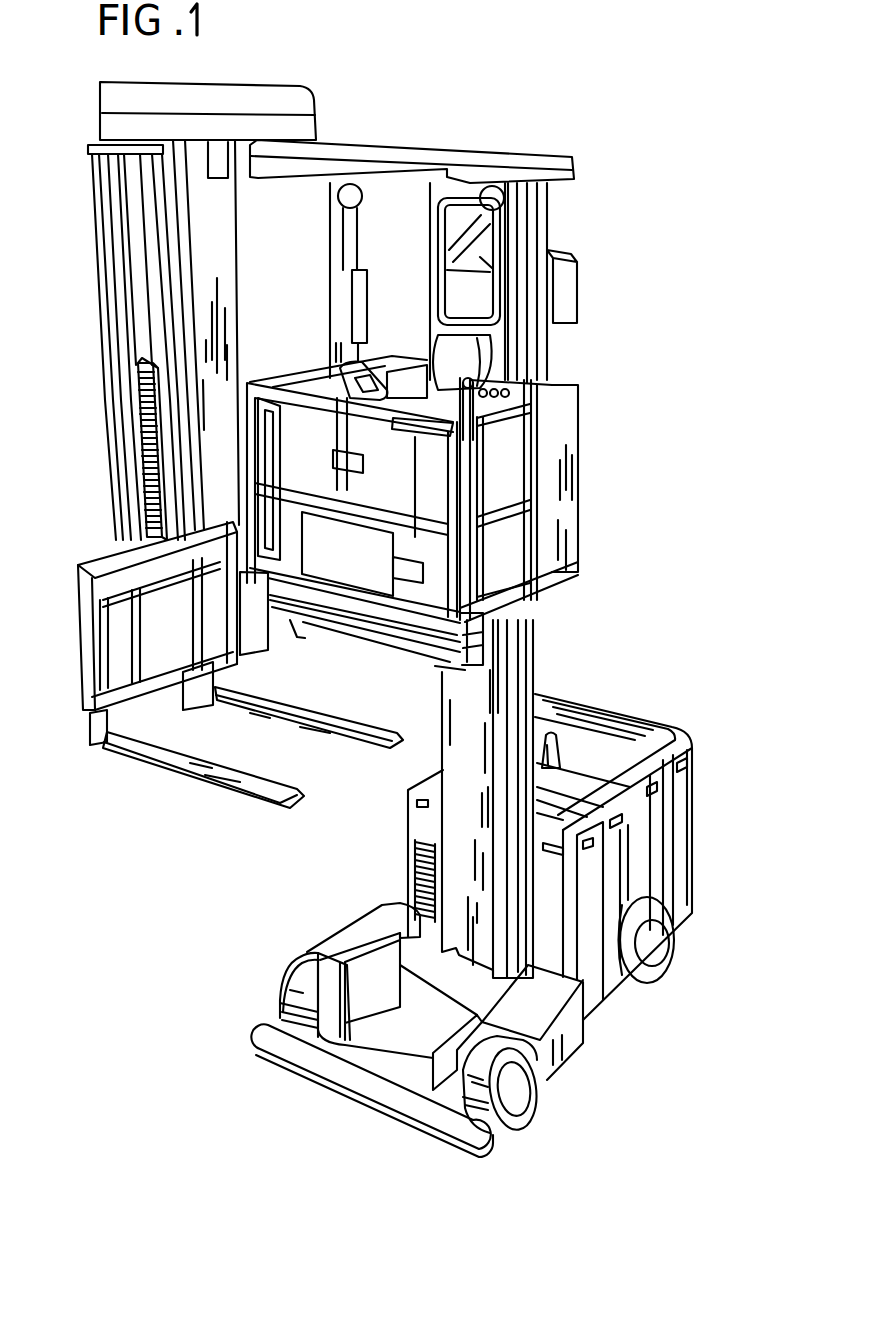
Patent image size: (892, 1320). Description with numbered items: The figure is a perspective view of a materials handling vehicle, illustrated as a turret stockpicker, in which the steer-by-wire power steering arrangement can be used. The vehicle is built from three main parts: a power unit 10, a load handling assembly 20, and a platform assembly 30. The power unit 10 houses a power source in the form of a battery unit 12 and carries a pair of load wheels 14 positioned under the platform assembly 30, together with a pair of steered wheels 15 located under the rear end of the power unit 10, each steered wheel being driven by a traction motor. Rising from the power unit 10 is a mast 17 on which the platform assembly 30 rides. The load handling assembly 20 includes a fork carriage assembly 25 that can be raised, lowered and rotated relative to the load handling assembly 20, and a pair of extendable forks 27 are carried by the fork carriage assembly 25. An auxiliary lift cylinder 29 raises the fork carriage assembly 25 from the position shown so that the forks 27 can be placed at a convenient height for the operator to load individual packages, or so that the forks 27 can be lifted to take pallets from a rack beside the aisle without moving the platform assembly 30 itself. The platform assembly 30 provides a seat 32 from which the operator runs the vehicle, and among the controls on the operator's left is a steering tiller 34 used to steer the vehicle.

The power unit 10 is at (675, 706).
The battery unit 12 is at (648, 832).
The load wheels 14 is at (297, 972).
The steered wheels 15 is at (657, 968).
The mast 17 is at (537, 652).
The load handling assembly 20 is at (105, 472).
The fork carriage assembly 25 is at (128, 758).
The extendable forks 27 is at (355, 722).
The auxiliary lift cylinder 29 is at (141, 422).
The platform assembly 30 is at (587, 478).
The seat 32 is at (467, 350).
The steering tiller 34 is at (487, 380).